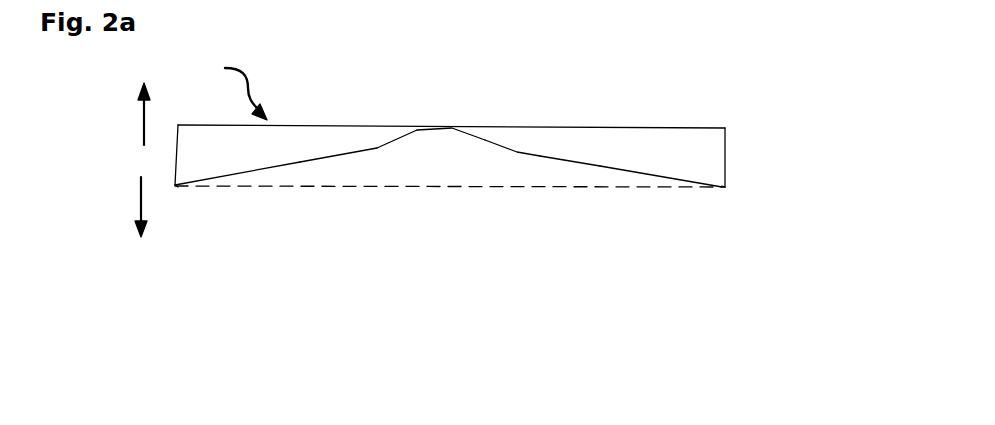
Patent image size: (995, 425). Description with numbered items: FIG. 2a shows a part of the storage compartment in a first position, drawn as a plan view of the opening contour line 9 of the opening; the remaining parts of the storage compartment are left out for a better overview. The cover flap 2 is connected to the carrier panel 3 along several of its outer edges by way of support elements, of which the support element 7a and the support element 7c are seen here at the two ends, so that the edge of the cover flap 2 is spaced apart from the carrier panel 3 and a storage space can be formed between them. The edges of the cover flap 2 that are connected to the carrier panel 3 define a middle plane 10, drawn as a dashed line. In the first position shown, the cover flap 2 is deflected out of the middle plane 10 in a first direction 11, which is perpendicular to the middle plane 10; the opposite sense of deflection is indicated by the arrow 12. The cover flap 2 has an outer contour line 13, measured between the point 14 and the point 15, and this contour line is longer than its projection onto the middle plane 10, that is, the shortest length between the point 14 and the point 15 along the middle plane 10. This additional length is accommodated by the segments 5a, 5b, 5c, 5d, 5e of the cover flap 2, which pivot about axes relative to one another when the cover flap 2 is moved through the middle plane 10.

The cover flap 2 is at (665, 178).
The carrier panel 3 is at (317, 126).
The segment 5a is at (260, 172).
The segment 5b is at (393, 143).
The segment 5c is at (452, 130).
The segment 5d is at (511, 150).
The segment 5e is at (567, 162).
The support element 7a is at (174, 154).
The support element 7c is at (727, 153).
The opening contour line 9 is at (215, 85).
The middle plane 10 is at (596, 188).
The first direction 11 is at (143, 121).
The downward direction 12 is at (138, 204).
The outer contour line 13 is at (302, 163).
The point 14 is at (177, 188).
The point 15 is at (727, 187).